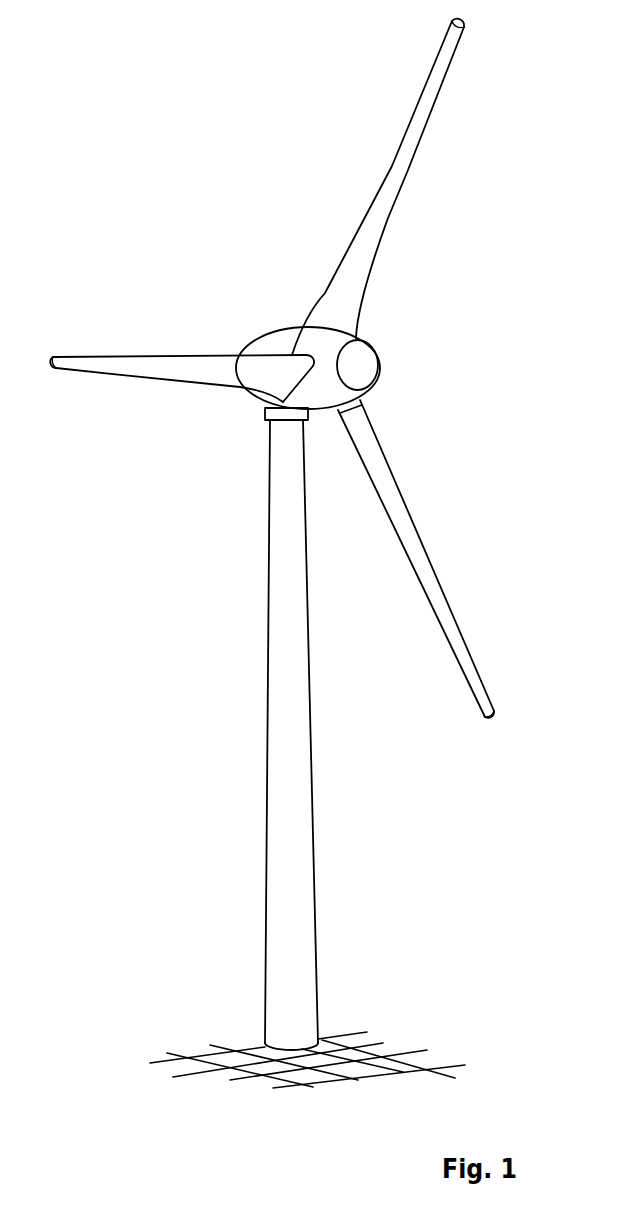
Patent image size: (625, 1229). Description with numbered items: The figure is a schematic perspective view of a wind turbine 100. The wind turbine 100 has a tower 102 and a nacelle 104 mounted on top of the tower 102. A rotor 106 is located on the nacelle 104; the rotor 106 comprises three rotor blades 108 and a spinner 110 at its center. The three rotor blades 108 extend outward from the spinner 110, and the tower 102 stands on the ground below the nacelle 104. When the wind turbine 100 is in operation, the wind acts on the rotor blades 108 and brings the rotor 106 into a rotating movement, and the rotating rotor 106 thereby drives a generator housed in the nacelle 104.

The wind turbine 100 is at (218, 495).
The tower 102 is at (295, 832).
The nacelle 104 is at (280, 340).
The rotor 106 is at (449, 288).
The rotor blades 108 is at (415, 135).
The spinner 110 is at (362, 367).